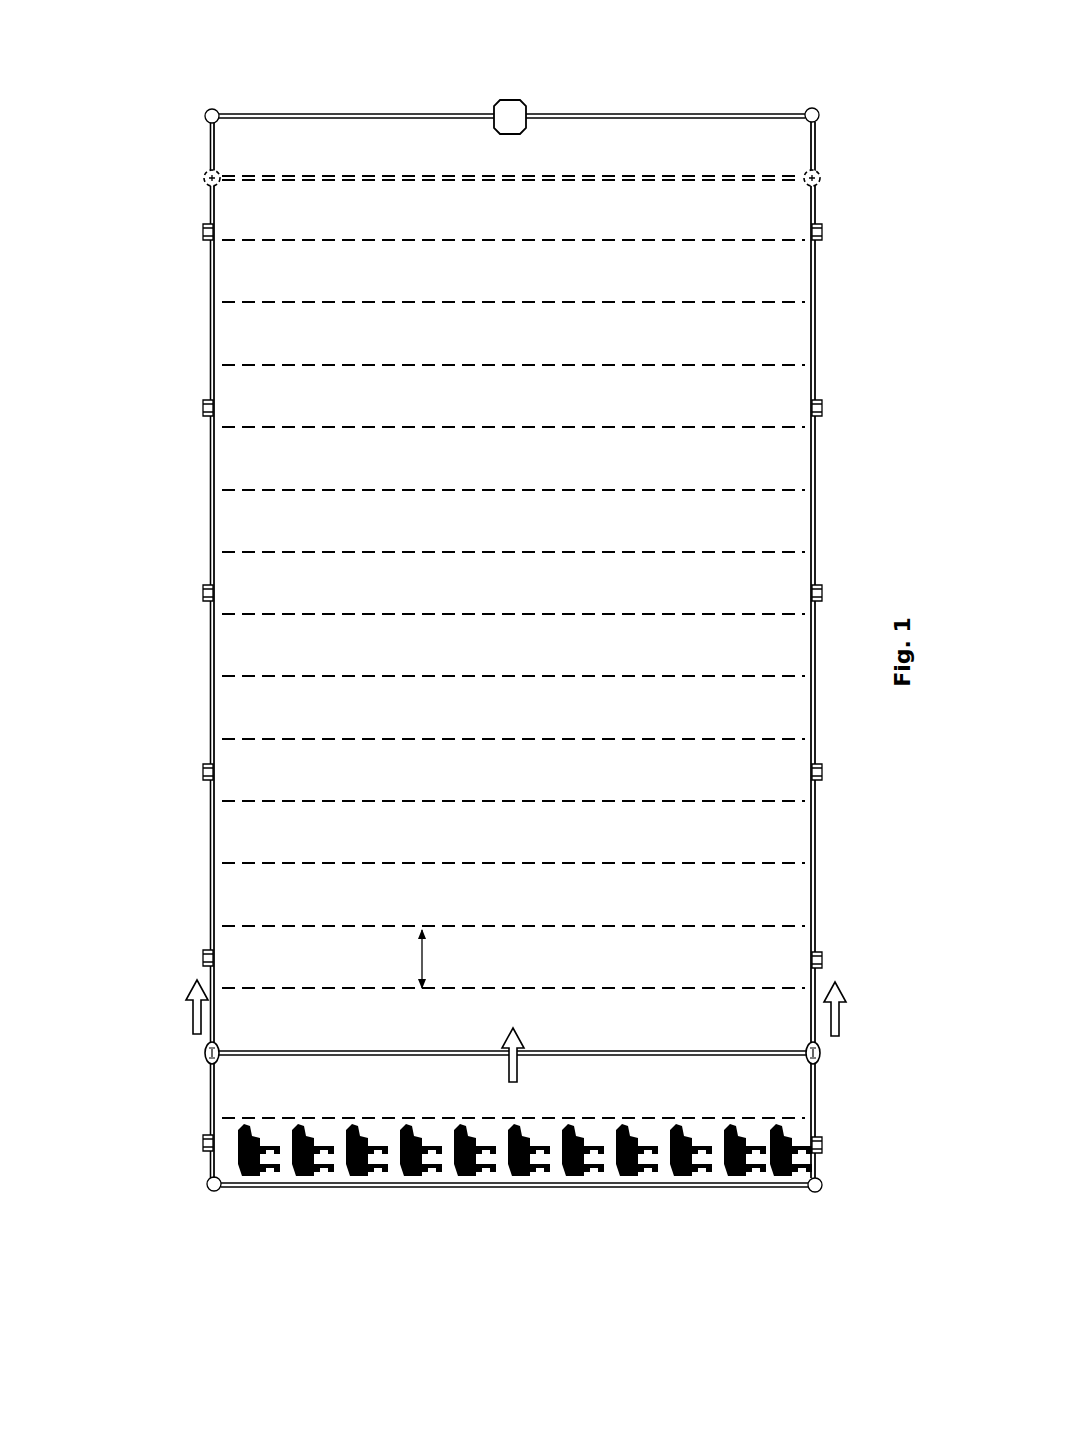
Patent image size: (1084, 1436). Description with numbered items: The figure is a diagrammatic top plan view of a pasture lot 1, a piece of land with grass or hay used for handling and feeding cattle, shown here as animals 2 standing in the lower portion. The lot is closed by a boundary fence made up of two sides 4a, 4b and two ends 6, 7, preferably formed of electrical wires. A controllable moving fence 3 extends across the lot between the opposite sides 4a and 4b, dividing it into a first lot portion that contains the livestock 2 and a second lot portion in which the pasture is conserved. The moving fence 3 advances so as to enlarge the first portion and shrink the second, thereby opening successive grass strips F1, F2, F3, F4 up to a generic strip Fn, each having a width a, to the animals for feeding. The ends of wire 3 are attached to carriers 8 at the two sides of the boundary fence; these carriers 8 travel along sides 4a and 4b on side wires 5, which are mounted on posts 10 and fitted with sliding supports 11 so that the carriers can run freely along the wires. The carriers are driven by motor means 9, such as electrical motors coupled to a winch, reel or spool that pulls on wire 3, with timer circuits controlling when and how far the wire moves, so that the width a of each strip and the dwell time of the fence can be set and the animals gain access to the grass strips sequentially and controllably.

The lot 1 is at (186, 681).
The animals 2 is at (528, 1165).
The moving fence 3 is at (282, 1064).
The side of boundary fence 4a is at (203, 323).
The side of boundary fence 4b is at (822, 326).
The side wires 5 is at (208, 512).
The end of boundary fence 6 is at (463, 1188).
The end of boundary fence 7 is at (336, 112).
The carriers 8 is at (205, 1053).
The motor means 9 is at (495, 106).
The posts 10 is at (204, 232).
The sliding supports 11 is at (218, 414).
The width of strip a is at (409, 959).
The strip F1 is at (787, 1094).
The strip F2 is at (790, 1010).
The strip F3 is at (787, 968).
The strip F4 is at (787, 903).
The strip Fn is at (770, 205).